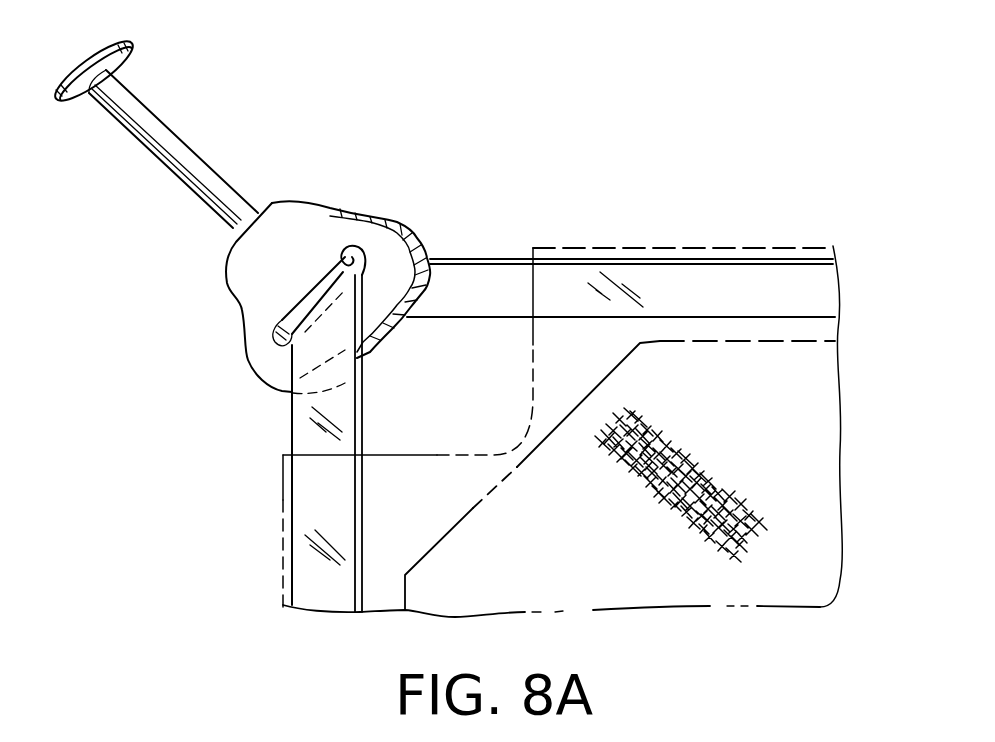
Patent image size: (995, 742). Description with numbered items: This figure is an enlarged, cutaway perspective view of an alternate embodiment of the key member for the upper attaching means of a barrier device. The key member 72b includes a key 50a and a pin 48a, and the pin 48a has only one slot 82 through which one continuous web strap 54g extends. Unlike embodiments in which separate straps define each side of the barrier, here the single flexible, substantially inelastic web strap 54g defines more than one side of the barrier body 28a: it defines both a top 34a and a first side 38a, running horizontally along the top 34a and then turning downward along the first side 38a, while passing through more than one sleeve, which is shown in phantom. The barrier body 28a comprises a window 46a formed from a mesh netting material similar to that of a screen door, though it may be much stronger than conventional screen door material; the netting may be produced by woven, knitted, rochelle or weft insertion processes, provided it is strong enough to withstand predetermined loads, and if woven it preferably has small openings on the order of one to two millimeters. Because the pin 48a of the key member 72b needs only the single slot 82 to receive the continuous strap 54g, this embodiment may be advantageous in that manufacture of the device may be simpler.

The barrier body 28a is at (412, 634).
The top 34a is at (768, 170).
The first side 38a is at (232, 575).
The window 46a is at (583, 583).
The pin 48a is at (195, 152).
The key 50a is at (134, 43).
The web strap 54g is at (466, 278).
The key member 72b is at (298, 200).
The slot 82 is at (354, 250).